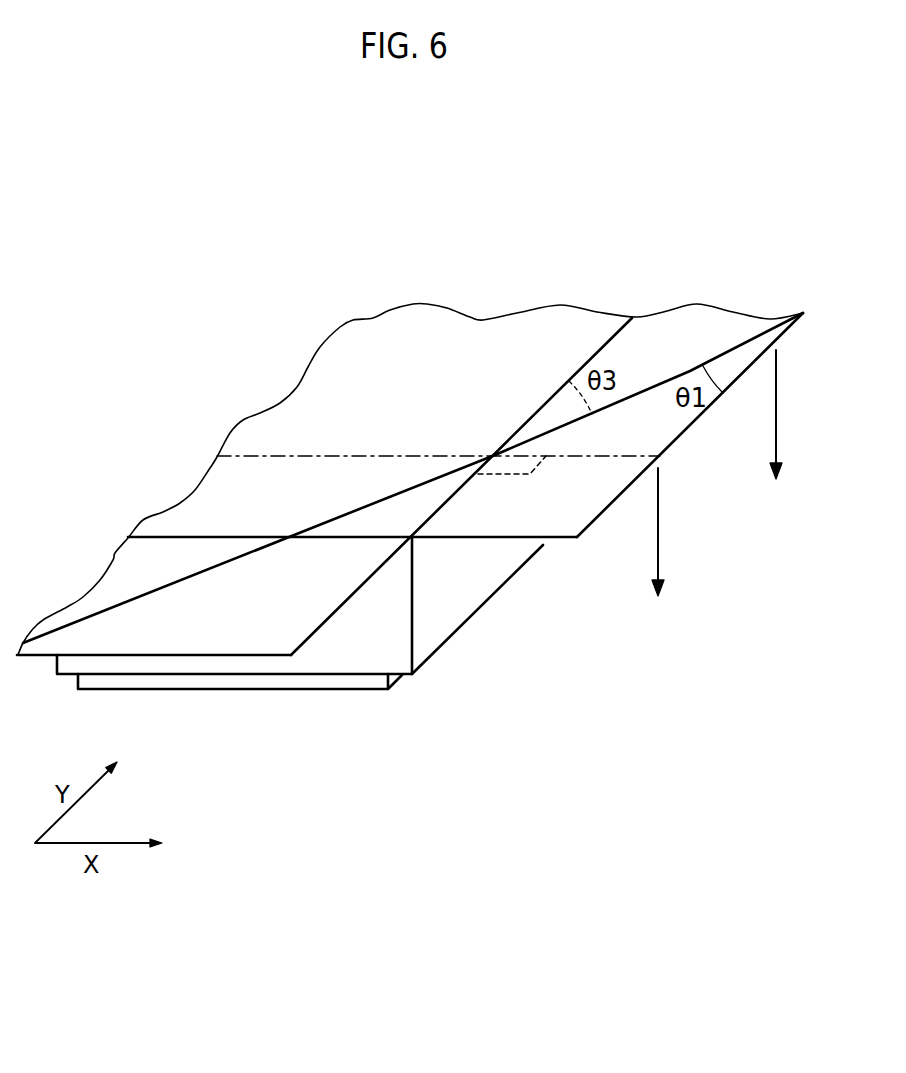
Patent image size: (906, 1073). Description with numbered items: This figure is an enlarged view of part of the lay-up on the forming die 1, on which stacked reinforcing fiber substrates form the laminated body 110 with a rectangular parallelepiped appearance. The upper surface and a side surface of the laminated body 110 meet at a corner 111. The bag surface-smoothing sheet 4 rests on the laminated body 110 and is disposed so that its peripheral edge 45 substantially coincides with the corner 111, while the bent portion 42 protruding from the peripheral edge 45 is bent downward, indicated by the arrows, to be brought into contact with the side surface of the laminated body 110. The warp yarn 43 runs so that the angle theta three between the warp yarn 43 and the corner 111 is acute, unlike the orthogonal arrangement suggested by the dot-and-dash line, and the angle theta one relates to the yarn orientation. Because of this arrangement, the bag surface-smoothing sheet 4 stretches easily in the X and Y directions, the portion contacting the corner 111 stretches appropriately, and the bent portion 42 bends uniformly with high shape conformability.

The forming die 1 is at (317, 613).
The laminated body 110 is at (460, 630).
The corner 111 is at (452, 497).
The bag surface-smoothing sheet 4 is at (410, 443).
The bent portion 42 is at (665, 307).
The warp yarn 43 is at (707, 373).
The peripheral edge 45 is at (583, 361).